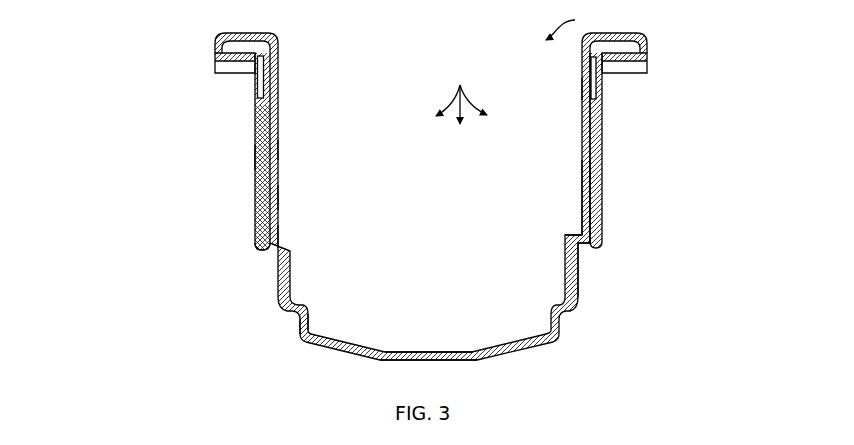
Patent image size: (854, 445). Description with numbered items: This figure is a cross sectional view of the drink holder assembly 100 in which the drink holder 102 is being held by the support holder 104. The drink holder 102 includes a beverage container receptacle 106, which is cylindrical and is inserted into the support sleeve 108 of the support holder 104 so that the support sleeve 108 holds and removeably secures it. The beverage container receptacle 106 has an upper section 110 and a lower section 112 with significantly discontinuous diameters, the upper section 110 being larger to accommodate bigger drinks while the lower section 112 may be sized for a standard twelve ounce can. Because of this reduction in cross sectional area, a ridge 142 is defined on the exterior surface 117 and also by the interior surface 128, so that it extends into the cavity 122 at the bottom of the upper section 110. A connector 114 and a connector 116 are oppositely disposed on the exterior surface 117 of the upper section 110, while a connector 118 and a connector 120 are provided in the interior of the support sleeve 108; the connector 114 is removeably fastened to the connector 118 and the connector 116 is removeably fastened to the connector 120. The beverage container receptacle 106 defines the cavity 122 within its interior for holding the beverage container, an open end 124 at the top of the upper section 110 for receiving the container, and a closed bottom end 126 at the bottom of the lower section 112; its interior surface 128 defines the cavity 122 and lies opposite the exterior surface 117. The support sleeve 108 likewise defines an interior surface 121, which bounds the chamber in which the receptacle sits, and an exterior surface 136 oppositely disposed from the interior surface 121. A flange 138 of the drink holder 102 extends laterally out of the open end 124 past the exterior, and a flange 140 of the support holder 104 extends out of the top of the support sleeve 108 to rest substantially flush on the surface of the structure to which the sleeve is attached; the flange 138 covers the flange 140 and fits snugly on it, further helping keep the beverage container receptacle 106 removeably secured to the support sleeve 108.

The drink holder assembly 100 is at (124, 87).
The drink holder 102 is at (278, 63).
The support holder 104 is at (258, 230).
The beverage container receptacle 106 is at (582, 90).
The support sleeve 108 is at (255, 98).
The upper section 110 is at (278, 150).
The lower section 112 is at (307, 322).
The connector 114 is at (278, 123).
The connector 116 is at (582, 186).
The exterior surface 117 is at (580, 272).
The connector 118 is at (278, 198).
The connector 120 is at (608, 150).
The interior surface 121 is at (268, 252).
The cavity 122 is at (461, 92).
The open end 124 is at (578, 21).
The closed bottom end 126 is at (428, 352).
The interior surface 128 is at (280, 237).
The exterior surface 136 is at (257, 158).
The flange 138 is at (637, 33).
The flange 140 is at (617, 68).
The ridge 142 is at (284, 250).